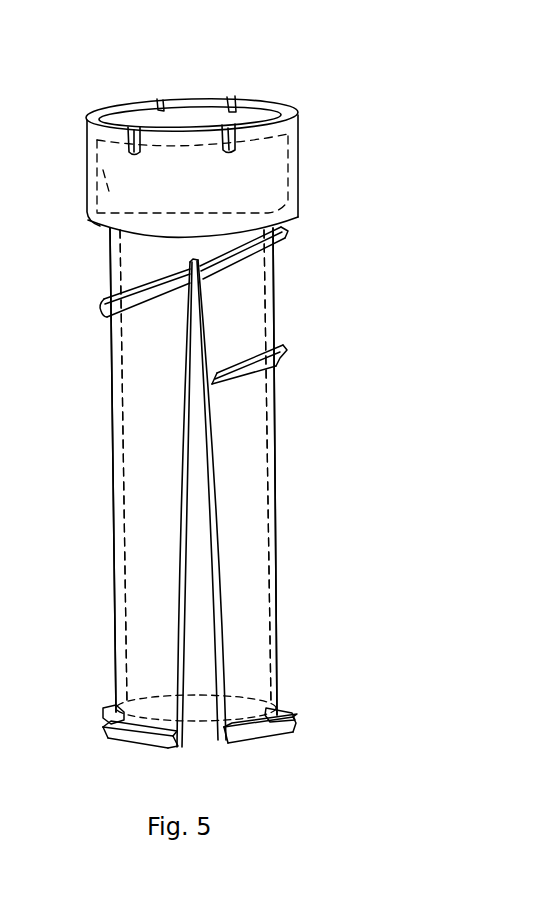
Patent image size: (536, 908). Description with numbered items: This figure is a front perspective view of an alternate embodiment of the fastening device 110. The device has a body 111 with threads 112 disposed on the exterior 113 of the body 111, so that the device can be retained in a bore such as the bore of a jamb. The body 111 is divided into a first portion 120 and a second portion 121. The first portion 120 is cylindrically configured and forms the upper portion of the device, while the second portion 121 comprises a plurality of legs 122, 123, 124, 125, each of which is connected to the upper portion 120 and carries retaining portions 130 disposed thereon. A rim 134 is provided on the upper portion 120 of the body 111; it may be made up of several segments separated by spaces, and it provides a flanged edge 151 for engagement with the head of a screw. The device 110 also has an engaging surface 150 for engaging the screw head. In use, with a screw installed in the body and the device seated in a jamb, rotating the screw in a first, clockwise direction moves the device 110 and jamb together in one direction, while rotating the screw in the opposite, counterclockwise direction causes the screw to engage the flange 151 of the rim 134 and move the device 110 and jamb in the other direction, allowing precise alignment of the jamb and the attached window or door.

The fastening device 110 is at (292, 256).
The body 111 is at (106, 249).
The threads 112 is at (105, 306).
The exterior 113 is at (112, 438).
The first portion 120 is at (300, 184).
The second portion 121 is at (274, 460).
The leg 122 is at (259, 581).
The leg 123 is at (140, 520).
The leg 124 is at (270, 622).
The leg 125 is at (122, 650).
The retaining portions 130 is at (103, 713).
The rim 134 is at (286, 114).
The engaging surface 150 is at (86, 158).
The flanged edge 151 is at (262, 110).